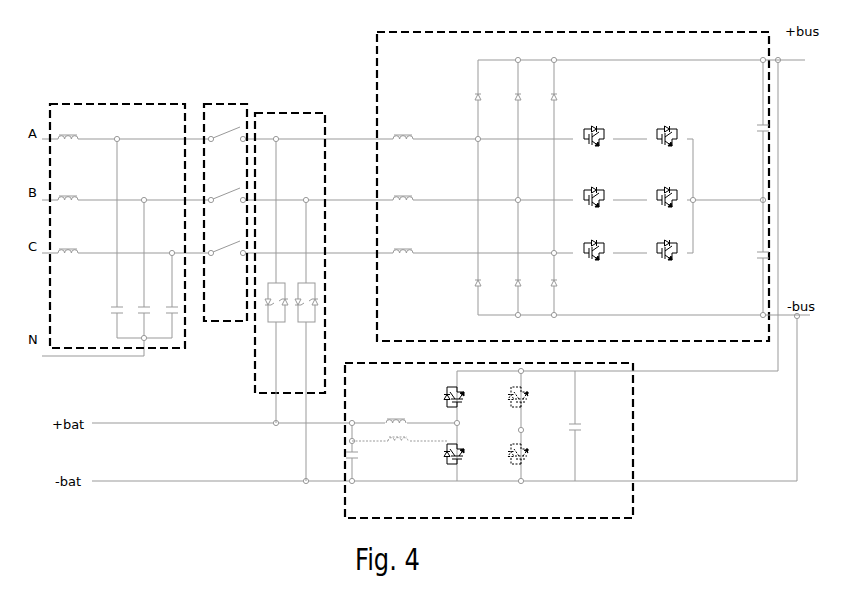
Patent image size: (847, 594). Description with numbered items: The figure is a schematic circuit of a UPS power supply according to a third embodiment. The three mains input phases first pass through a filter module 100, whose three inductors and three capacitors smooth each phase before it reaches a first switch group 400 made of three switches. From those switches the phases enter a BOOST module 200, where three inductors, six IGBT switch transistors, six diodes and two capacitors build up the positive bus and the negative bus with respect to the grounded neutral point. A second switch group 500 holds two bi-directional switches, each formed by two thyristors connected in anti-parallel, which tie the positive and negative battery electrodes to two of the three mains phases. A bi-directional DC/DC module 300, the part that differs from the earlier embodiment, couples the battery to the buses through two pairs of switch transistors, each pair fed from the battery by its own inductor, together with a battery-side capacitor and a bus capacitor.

The filter module 100 is at (117, 226).
The BOOST module 200 is at (593, 186).
The bi-directional DC/DC module 300 is at (561, 440).
The first switch group 400 is at (225, 212).
The second switch group 500 is at (290, 297).